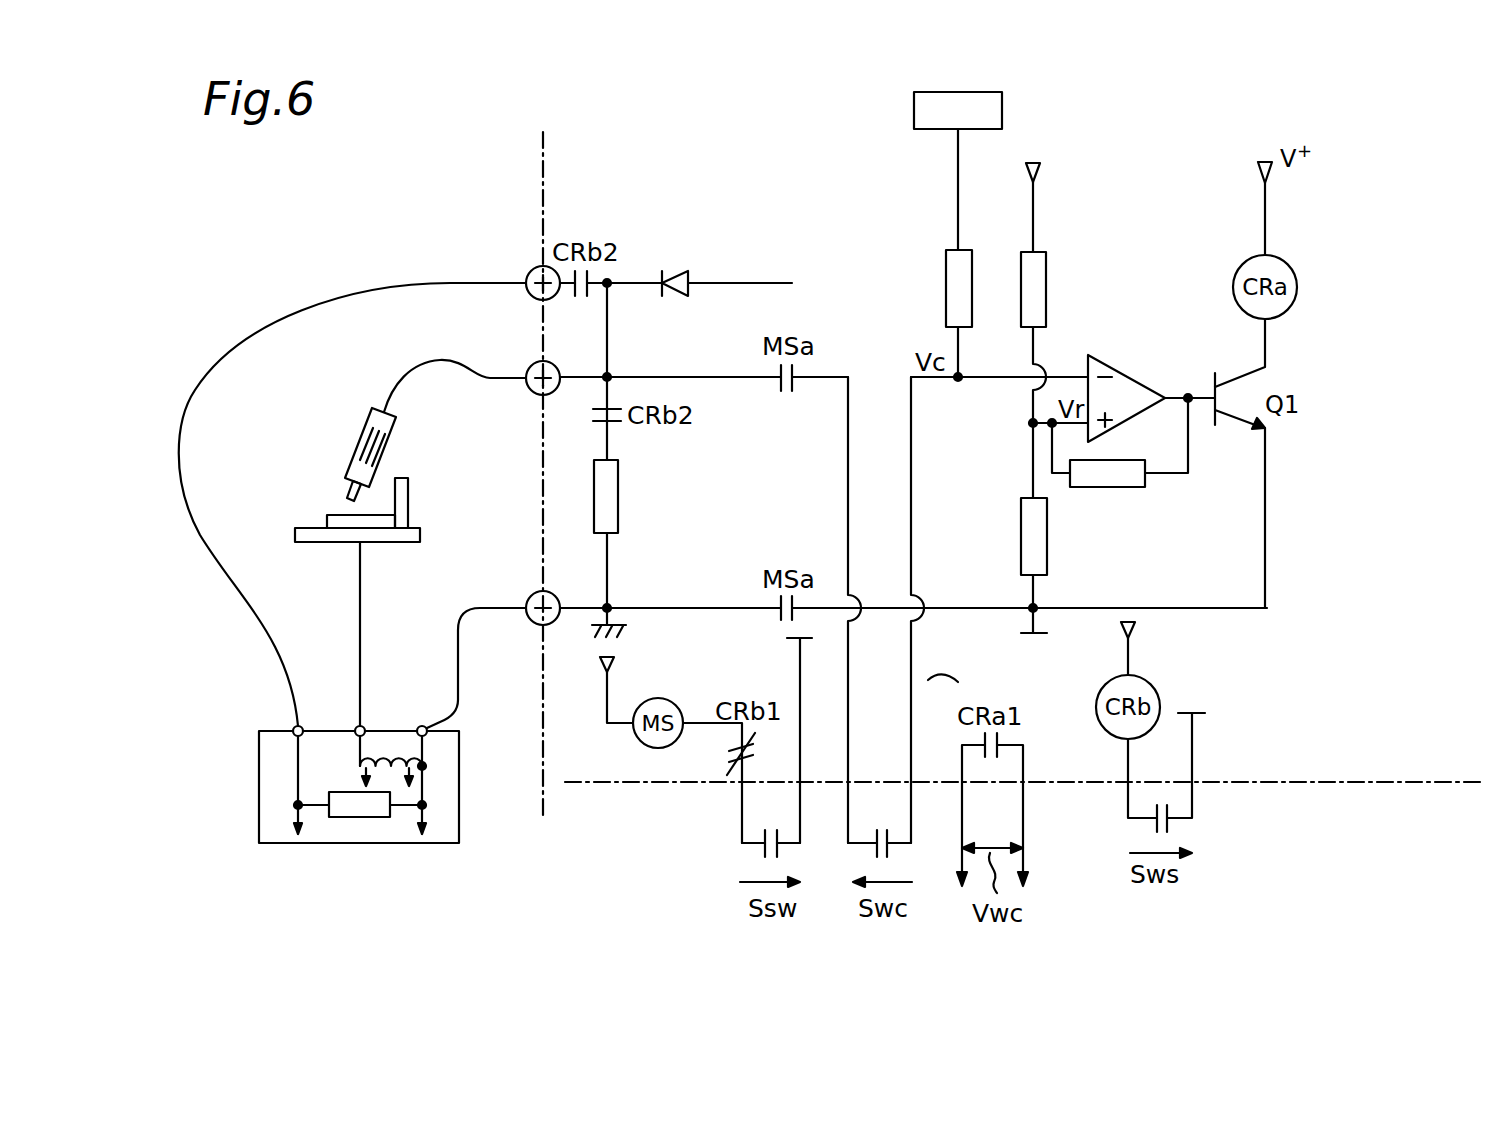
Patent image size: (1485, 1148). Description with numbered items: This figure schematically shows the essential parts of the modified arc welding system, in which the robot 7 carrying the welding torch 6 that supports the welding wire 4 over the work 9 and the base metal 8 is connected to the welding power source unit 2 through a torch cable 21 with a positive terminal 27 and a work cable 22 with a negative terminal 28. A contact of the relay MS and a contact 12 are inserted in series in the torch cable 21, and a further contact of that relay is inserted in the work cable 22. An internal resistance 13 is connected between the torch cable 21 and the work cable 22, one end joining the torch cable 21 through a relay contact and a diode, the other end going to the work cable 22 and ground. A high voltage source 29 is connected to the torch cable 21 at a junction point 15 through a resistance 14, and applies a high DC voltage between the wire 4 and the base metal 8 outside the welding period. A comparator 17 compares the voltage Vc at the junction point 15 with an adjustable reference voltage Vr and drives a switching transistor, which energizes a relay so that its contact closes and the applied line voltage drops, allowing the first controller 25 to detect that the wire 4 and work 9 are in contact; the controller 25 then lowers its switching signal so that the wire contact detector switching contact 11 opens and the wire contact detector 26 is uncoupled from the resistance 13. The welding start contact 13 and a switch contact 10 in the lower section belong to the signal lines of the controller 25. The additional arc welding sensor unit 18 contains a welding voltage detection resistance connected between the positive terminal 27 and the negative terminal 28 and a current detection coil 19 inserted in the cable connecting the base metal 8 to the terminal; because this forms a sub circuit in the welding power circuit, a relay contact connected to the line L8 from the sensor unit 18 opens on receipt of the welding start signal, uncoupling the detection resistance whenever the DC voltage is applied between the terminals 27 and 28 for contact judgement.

The welding power source unit 2 is at (555, 163).
The robot 7 is at (532, 163).
The welding wire 4 is at (343, 490).
The welding torch 6 is at (357, 443).
The base metal 8 is at (305, 544).
The work 9 is at (408, 498).
The switch contact 10 is at (1170, 822).
The wire contact detector switching contact 11 is at (763, 850).
The contact 12 is at (890, 850).
The internal resistance 13 is at (618, 495).
The resistance 14 is at (946, 288).
The junction point 15 is at (958, 385).
The comparator 17 is at (1133, 372).
The arc welding sensor unit 18 is at (396, 762).
The current detection coil 19 is at (389, 757).
The torch cable 21 is at (497, 380).
The work cable 22 is at (497, 611).
The first controller 25 is at (1393, 782).
The wire contact detector 26 is at (1393, 731).
The positive terminal 27 is at (530, 363).
The negative terminal 28 is at (529, 596).
The high voltage source 29 is at (914, 105).
The line L8 is at (204, 548).